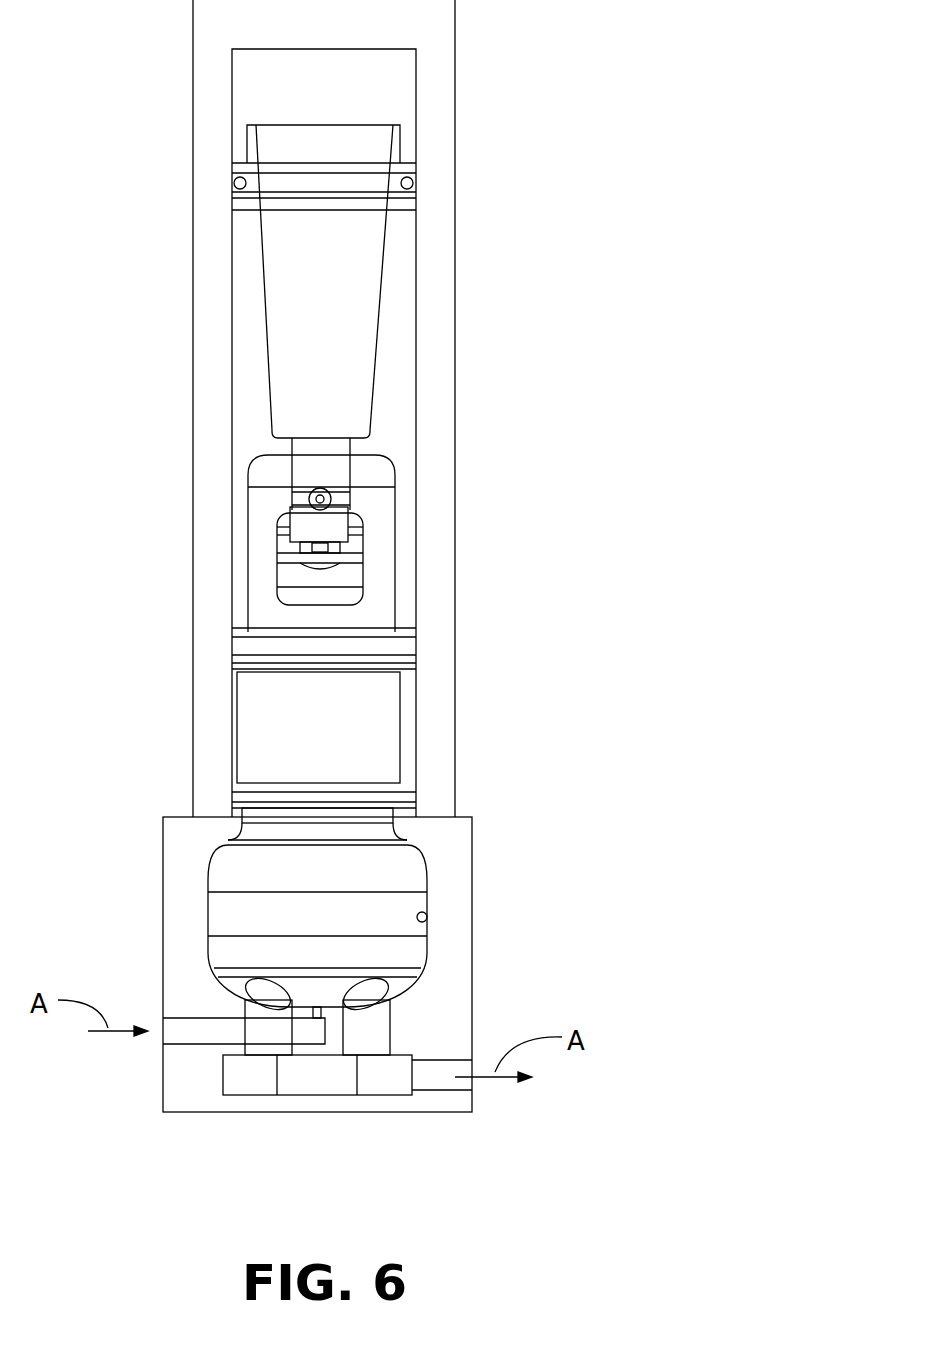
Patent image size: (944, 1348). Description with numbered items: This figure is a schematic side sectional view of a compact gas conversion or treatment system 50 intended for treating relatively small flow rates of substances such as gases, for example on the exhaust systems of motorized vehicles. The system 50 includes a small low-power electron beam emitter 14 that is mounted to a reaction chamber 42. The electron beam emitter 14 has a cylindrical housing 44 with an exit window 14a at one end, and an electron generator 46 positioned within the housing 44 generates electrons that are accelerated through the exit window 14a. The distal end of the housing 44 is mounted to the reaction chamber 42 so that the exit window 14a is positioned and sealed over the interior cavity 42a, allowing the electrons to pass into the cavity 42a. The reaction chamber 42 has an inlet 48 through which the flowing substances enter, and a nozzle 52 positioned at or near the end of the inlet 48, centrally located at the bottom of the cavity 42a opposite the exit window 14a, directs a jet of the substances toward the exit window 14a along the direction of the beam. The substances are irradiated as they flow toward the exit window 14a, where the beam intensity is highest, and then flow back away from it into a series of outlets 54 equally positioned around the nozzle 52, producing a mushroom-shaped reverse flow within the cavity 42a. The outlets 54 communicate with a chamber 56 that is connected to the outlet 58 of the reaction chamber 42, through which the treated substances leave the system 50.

The electron beam emitter 14 is at (440, 78).
The exit window 14a is at (353, 815).
The reaction chamber 42 is at (473, 856).
The interior cavity 42a is at (428, 919).
The cylindrical housing 44 is at (450, 390).
The electron generator 46 is at (362, 553).
The inlet 48 is at (162, 1037).
The gas conversion or treatment system 50 is at (664, 159).
The nozzle 52 is at (322, 997).
The outlets 54 is at (262, 996).
The chamber 56 is at (297, 1087).
The outlet 58 is at (472, 1085).